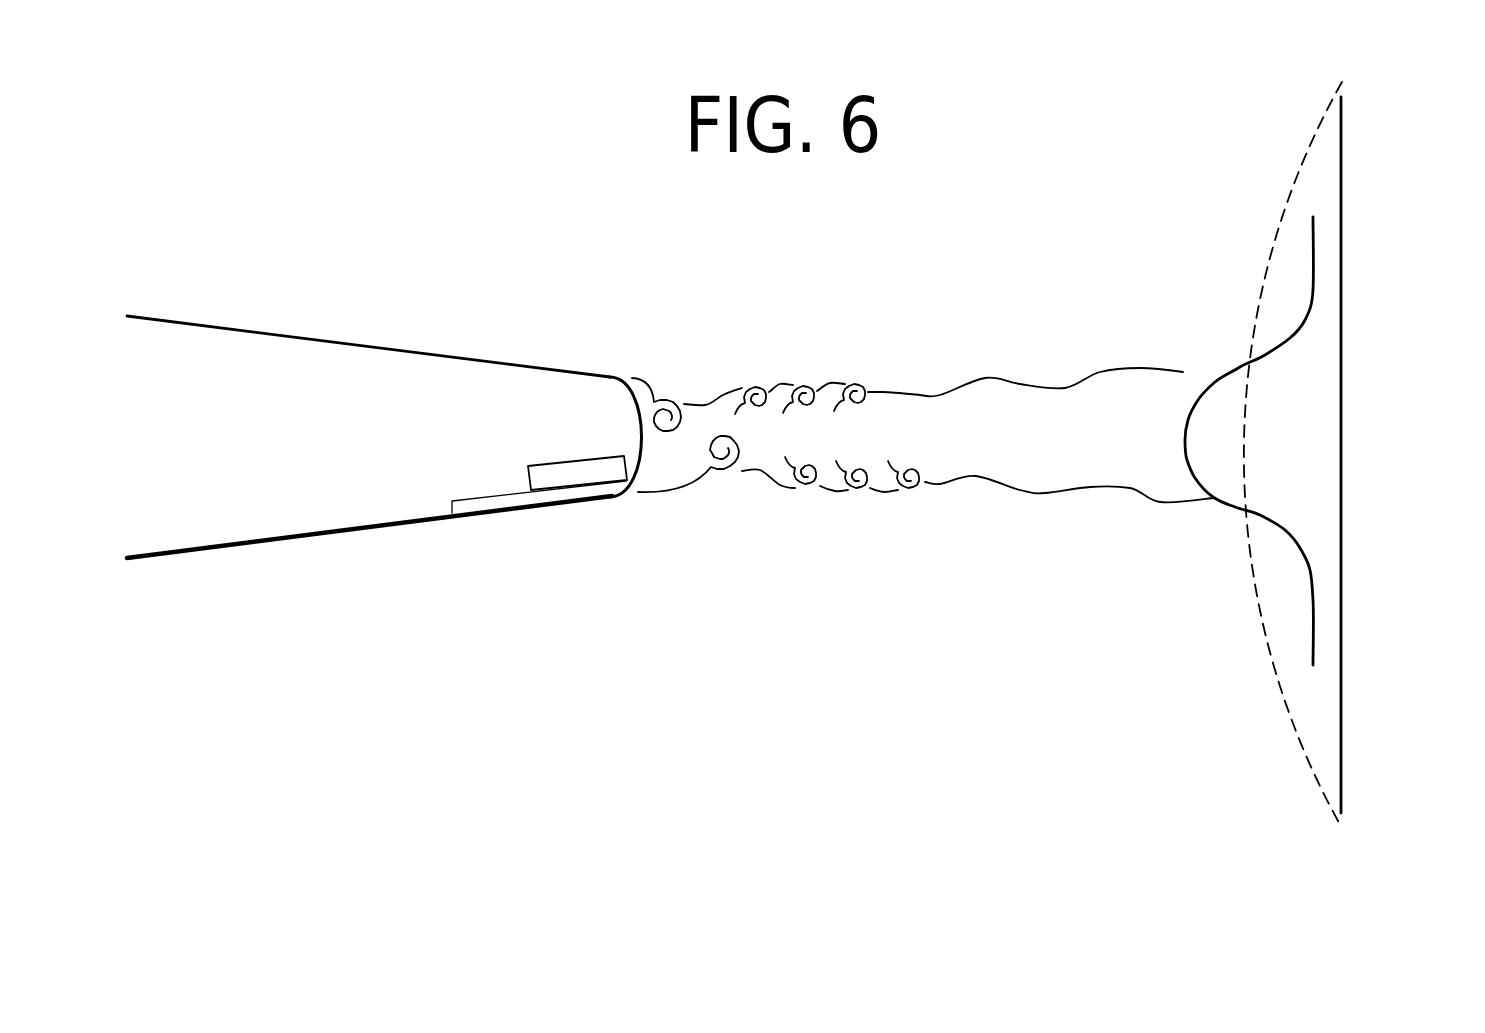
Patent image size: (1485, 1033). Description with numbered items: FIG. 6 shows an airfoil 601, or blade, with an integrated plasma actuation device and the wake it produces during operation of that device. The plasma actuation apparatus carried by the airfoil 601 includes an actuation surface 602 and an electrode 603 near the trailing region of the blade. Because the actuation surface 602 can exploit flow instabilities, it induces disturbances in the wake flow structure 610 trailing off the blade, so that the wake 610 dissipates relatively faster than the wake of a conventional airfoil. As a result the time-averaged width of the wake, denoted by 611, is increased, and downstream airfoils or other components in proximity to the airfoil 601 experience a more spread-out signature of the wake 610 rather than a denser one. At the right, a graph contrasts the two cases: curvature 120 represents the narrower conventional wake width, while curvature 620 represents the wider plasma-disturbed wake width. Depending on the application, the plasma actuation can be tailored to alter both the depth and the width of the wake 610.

The airfoil 601 is at (403, 350).
The actuation surface 602 is at (438, 524).
The electrode 603 is at (573, 478).
The wake flow structure 610 is at (637, 595).
The plasma-disturbed wake width curvature 620 is at (1228, 355).
The wake width 611 is at (1362, 355).
The conventional wake width curvature 120 is at (1243, 535).